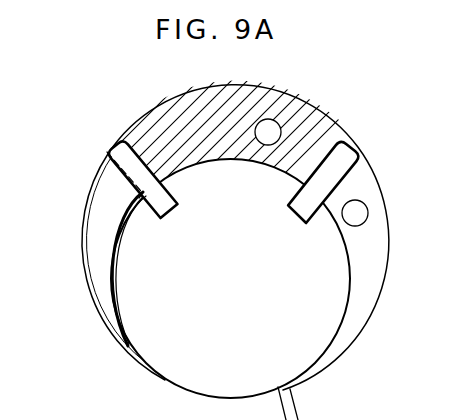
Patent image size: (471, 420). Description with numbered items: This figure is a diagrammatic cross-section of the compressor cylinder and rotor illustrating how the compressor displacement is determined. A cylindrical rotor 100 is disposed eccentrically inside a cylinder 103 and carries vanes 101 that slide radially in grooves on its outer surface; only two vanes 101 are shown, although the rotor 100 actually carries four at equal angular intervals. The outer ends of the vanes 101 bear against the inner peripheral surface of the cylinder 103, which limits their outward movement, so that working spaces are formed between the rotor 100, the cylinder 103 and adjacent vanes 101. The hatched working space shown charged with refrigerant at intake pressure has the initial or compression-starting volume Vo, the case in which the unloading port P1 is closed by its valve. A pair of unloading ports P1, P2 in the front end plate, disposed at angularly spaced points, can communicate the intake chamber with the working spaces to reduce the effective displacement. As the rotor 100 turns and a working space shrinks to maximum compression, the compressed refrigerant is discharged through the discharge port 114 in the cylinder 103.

The cylindrical rotor 100 is at (348, 308).
The vanes 101 is at (113, 146).
The cylinder 103 is at (387, 263).
The discharge port 114 is at (296, 402).
The unloading port P1 is at (272, 119).
The unloading port P2 is at (368, 203).
The compression-starting volume Vo is at (215, 97).